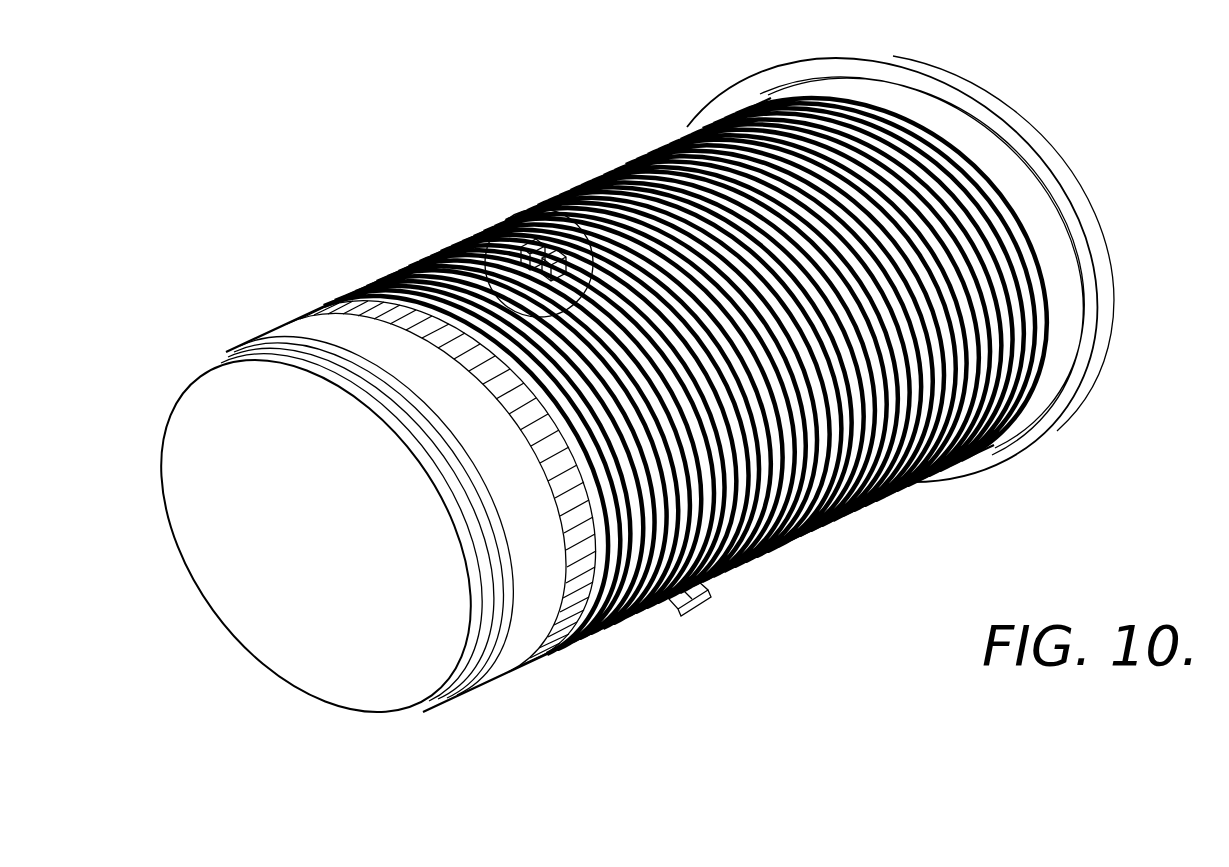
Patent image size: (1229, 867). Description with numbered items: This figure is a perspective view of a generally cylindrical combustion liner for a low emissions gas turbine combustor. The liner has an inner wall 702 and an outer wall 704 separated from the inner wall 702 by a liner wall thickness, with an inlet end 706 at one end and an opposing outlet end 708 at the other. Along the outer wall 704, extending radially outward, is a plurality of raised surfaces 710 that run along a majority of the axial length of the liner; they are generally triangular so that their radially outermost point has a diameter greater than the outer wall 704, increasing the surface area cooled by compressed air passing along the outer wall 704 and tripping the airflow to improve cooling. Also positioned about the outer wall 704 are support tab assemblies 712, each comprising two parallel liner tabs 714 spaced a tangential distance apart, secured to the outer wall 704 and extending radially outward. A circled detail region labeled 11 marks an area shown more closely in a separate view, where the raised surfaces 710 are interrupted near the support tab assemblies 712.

The inner wall 702 is at (340, 679).
The outer wall 704 is at (532, 636).
The inlet end 706 is at (232, 633).
The outlet end 708 is at (1013, 110).
The raised surfaces 710 is at (662, 145).
The support tab assemblies 712 is at (741, 646).
The liner tabs 714 is at (706, 583).
The detail region of FIG. 11 is at (500, 230).